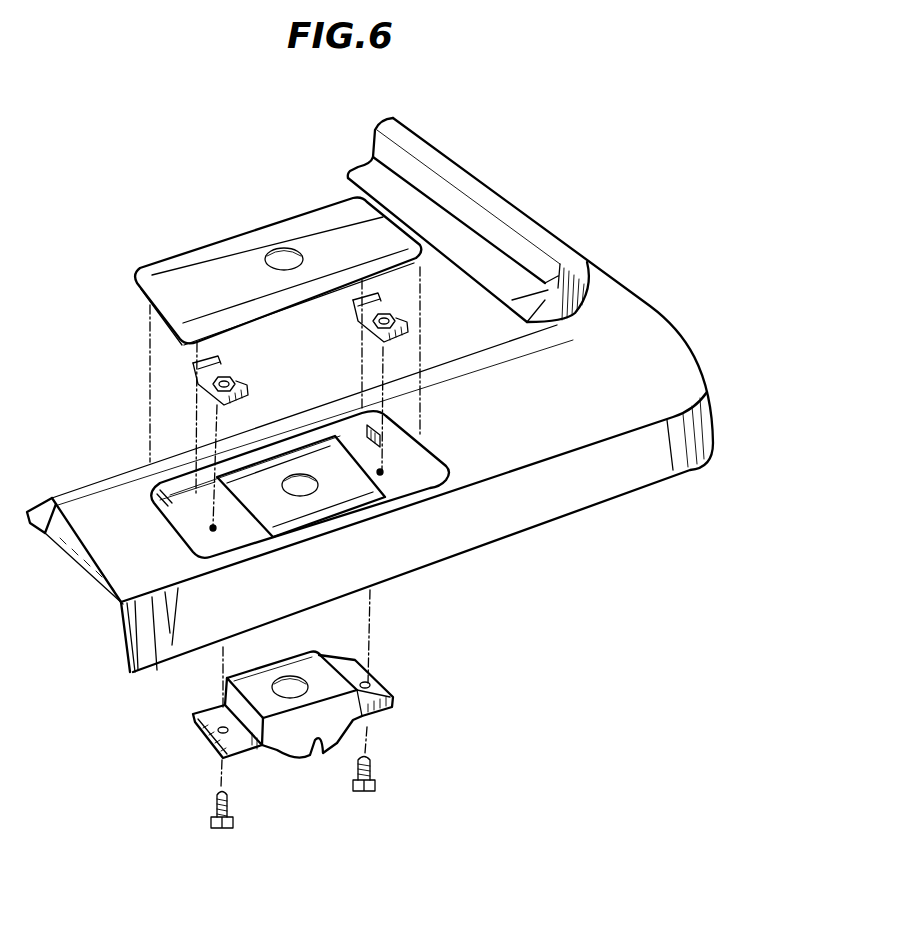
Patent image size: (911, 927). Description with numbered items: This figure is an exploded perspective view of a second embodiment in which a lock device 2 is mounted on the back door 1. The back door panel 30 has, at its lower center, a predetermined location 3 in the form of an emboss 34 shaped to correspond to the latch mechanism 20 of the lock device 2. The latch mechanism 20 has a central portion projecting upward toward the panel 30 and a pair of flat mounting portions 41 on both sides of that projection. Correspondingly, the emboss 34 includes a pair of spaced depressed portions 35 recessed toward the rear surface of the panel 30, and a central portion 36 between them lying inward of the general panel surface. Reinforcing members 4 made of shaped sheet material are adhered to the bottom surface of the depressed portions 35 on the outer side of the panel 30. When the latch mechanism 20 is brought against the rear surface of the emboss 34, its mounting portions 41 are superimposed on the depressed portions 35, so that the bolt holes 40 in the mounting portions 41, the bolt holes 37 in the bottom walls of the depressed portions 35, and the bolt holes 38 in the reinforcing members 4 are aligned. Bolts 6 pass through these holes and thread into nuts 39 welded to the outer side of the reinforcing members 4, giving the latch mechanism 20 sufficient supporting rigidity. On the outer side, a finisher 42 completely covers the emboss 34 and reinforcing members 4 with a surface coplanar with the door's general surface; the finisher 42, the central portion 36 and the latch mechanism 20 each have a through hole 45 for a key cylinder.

The back door 1 is at (632, 294).
The lock device 2 is at (284, 756).
The predetermined location 3 is at (343, 490).
The reinforcing member 4 is at (236, 382).
The bolt 6 is at (227, 830).
The latch mechanism 20 is at (317, 670).
The back door panel 30 is at (512, 463).
The emboss 34 is at (262, 478).
The depressed portion 35 is at (103, 578).
The central portion 36 is at (322, 447).
The bolt hole 37 is at (217, 537).
The bolt hole 38 is at (227, 373).
The nut 39 is at (200, 376).
The bolt hole 40 is at (370, 686).
The mounting portion 41 is at (388, 698).
The finisher 42 is at (210, 252).
The through hole 45 is at (286, 255).